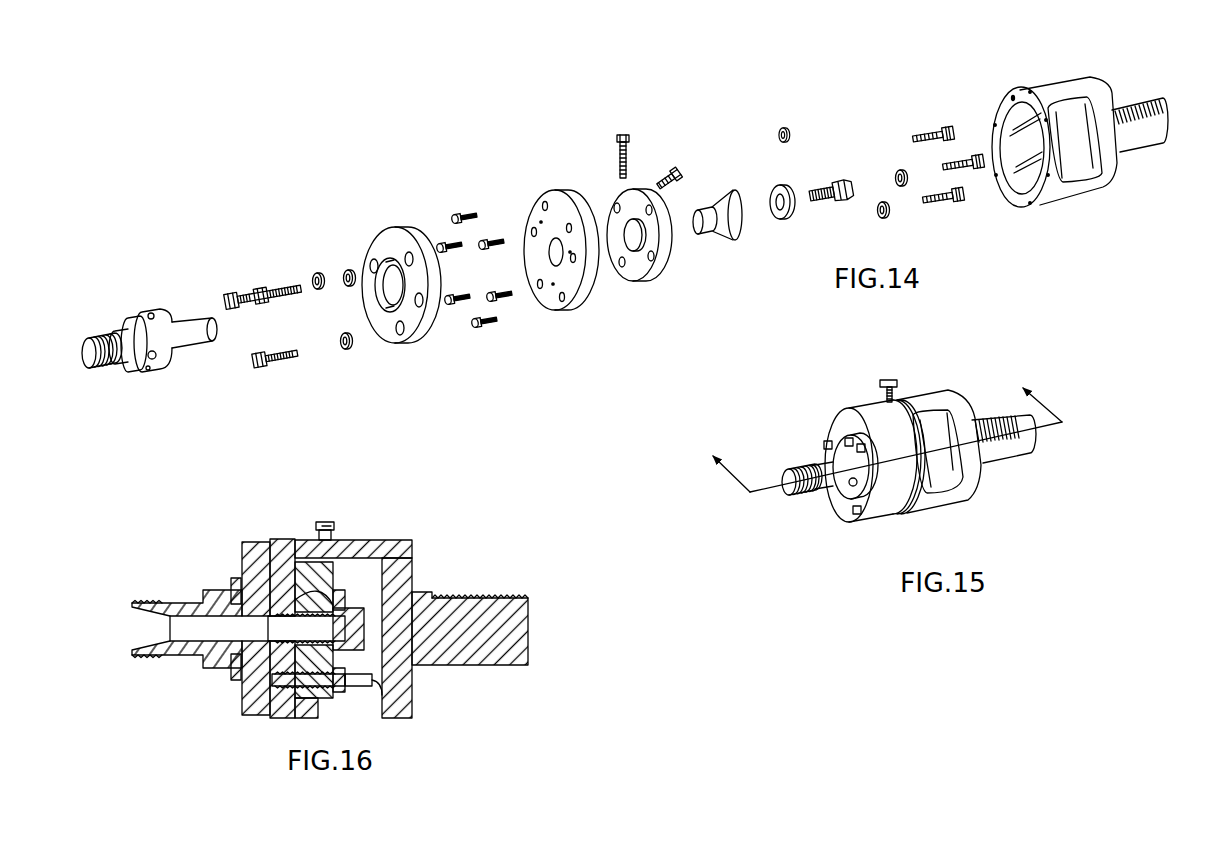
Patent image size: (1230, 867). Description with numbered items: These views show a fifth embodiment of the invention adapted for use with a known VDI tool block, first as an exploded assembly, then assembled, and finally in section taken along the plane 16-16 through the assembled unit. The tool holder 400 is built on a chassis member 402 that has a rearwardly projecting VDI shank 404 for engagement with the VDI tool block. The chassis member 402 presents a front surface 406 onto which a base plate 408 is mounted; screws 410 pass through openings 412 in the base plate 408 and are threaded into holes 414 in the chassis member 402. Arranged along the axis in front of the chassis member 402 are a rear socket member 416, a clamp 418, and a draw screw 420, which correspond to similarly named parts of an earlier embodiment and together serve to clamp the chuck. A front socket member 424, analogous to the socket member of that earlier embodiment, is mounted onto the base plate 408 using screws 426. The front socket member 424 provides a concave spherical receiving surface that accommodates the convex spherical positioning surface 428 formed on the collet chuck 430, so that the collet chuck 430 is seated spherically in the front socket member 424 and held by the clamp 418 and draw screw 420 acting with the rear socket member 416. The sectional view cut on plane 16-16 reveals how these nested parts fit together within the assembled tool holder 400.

In FIG. 14, the tool holder 400 is at (1064, 230).
In FIG. 14, the chassis member 402 is at (1094, 190).
In FIG. 14, the VDI shank 404 is at (1125, 150).
In FIG. 14, the front surface 406 is at (1000, 105).
In FIG. 14, the base plate 408 is at (558, 192).
In FIG. 14, the screws 410 is at (452, 218).
In FIG. 14, the openings 412 is at (563, 311).
In FIG. 14, the holes 414 is at (1012, 96).
In FIG. 14, the rear socket member 416 is at (653, 277).
In FIG. 14, the clamp 418 is at (733, 238).
In FIG. 14, the draw screw 420 is at (827, 181).
In FIG. 14, the front socket member 424 is at (392, 228).
In FIG. 14, the screws 426 is at (250, 298).
In FIG. 14, the convex spherical positioning surface 428 is at (176, 362).
In FIG. 14, the collet chuck 430 is at (158, 290).
In FIG. 15, the sectional plane 16 is at (882, 428).